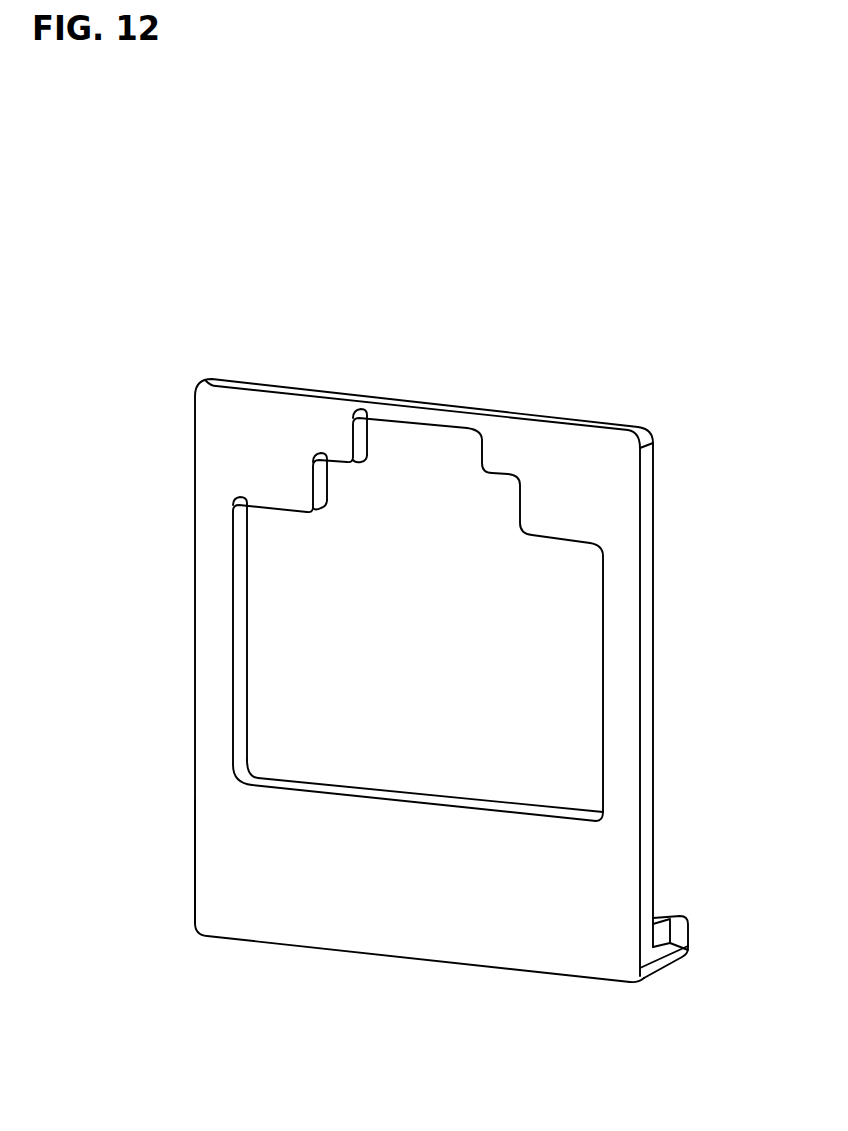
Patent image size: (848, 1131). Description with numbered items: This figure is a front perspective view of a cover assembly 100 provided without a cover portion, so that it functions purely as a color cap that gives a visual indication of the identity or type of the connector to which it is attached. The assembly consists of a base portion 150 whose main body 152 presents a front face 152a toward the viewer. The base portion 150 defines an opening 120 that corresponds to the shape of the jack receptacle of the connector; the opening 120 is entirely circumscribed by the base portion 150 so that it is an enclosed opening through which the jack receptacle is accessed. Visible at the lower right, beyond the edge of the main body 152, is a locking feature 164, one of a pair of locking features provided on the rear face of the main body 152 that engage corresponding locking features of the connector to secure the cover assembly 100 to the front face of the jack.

The cover assembly 100 is at (145, 376).
The opening 120 is at (275, 611).
The base portion 150 is at (215, 767).
The main body 152 is at (218, 820).
The front face 152a is at (218, 878).
The locking feature 164 is at (678, 930).